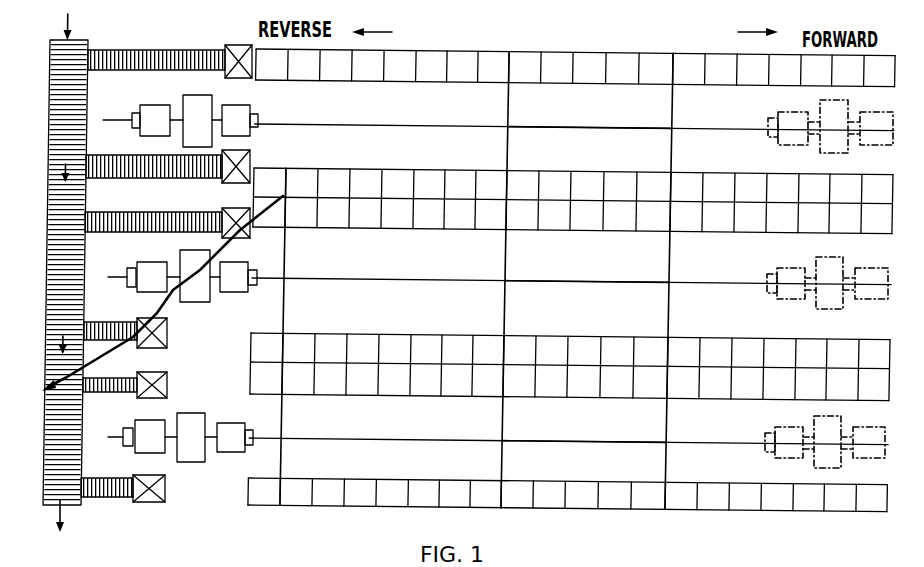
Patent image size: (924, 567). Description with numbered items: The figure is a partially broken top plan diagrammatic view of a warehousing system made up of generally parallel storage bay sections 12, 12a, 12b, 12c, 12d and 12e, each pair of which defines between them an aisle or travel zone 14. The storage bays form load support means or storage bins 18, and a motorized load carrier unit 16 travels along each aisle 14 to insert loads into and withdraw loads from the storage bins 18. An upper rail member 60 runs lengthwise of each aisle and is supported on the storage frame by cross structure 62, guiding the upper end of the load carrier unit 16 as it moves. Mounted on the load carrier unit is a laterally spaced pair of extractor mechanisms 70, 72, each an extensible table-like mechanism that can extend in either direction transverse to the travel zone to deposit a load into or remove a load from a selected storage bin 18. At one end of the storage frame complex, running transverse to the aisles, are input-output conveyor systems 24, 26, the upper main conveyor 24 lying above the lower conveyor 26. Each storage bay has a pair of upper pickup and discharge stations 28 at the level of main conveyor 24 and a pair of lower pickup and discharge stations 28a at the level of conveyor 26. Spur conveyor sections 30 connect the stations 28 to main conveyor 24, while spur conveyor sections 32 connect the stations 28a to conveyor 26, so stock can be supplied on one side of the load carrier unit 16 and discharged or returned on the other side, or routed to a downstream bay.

The storage bay section 12 is at (571, 268).
The storage bay section 12a is at (598, 172).
The storage bay section 12b is at (574, 278).
The storage bay section 12c is at (568, 332).
The storage bay section 12d is at (574, 438).
The storage bay section 12e is at (576, 480).
The aisle or travel zone 14 is at (571, 284).
The load carrier unit 16 is at (498, 278).
The storage bin 18 is at (571, 280).
The input-output conveyor system 24 is at (35, 298).
The input-output conveyor system 26 is at (42, 496).
The pickup and discharge station 28 is at (232, 46).
The pickup and discharge station 28a is at (172, 334).
The spur conveyor section 30 is at (162, 48).
The spur conveyor section 32 is at (145, 376).
The upper rail member 60 is at (587, 285).
The cross structure 62 is at (476, 279).
The extractor mechanism 70 is at (231, 98).
The extractor mechanism 72 is at (162, 96).